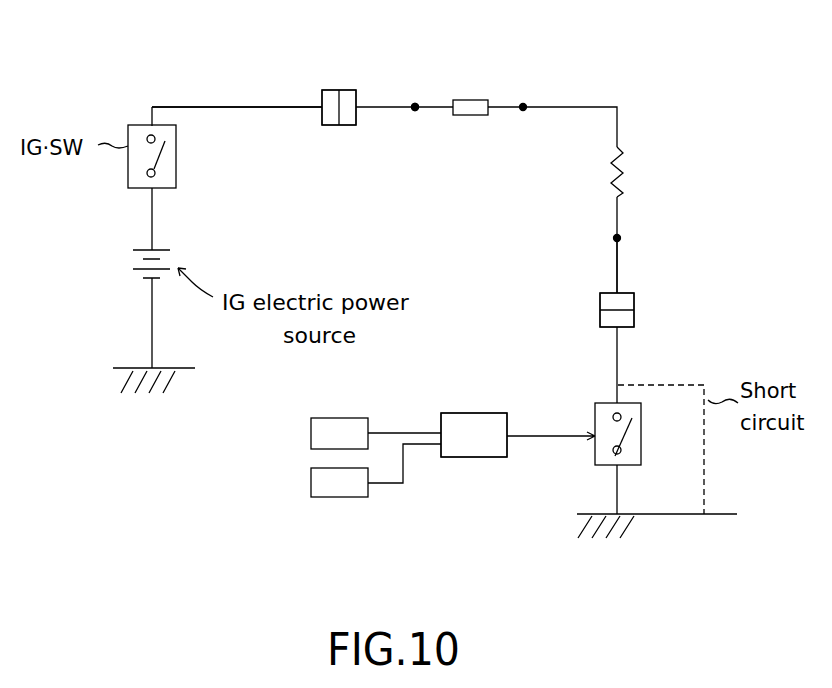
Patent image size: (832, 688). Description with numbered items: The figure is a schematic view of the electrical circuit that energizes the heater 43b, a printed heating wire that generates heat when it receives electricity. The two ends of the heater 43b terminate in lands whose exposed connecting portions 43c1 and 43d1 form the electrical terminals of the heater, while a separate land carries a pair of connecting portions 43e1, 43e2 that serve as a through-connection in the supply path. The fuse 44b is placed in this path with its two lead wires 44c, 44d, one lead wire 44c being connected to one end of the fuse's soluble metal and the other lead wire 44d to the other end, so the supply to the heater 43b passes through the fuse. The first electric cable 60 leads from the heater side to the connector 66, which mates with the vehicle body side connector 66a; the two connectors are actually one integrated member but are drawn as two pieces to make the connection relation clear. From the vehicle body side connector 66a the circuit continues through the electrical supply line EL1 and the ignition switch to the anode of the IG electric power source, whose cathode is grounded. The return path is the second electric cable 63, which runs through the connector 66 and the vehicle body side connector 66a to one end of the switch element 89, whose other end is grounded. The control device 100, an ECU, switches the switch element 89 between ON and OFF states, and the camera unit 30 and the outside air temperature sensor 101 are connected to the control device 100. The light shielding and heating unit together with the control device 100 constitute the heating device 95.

The first electric cable 60 is at (386, 107).
The electrical supply line EL1 is at (238, 108).
The connector 66 is at (348, 127).
The vehicle body side connector 66a is at (330, 126).
The connecting portion 43e1 is at (415, 105).
The connecting portion 43e2 is at (415, 107).
The connecting portion 43c1 is at (523, 105).
The connecting portion 43d1 is at (614, 238).
The second electric cable 63 is at (622, 249).
The heater 43b is at (625, 182).
The fuse 44b is at (473, 116).
The lead wire 44c is at (507, 109).
The lead wire 44d is at (435, 108).
The outside air temperature sensor 101 is at (358, 416).
The control device 100 is at (470, 412).
The heating device 95 is at (474, 435).
The camera unit 30 is at (332, 483).
The switch element 89 is at (642, 437).